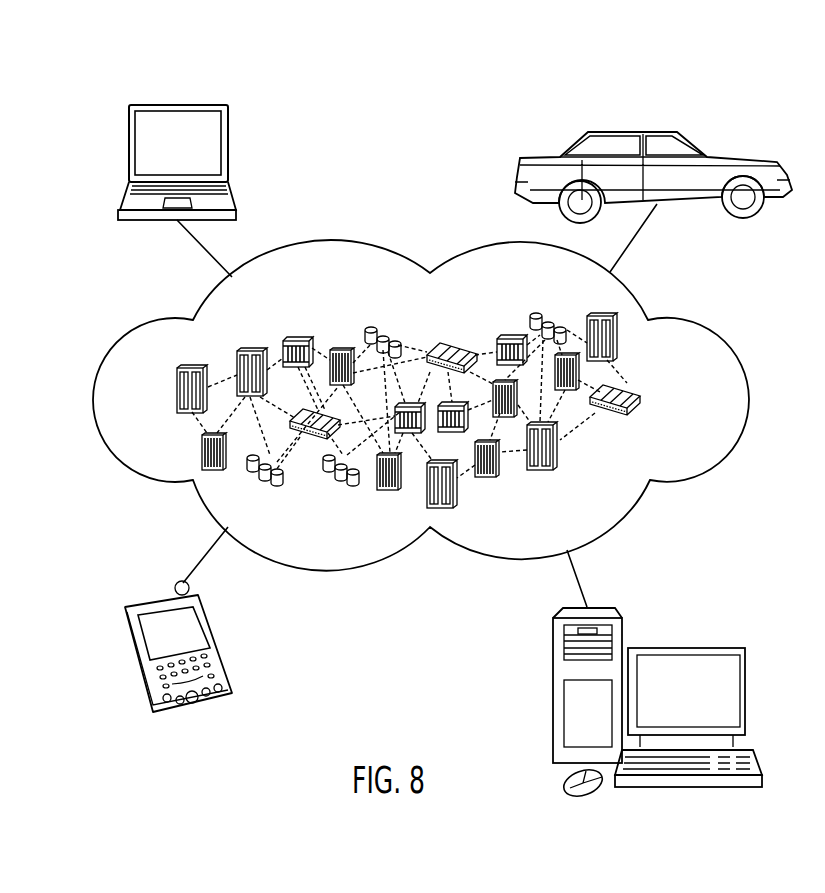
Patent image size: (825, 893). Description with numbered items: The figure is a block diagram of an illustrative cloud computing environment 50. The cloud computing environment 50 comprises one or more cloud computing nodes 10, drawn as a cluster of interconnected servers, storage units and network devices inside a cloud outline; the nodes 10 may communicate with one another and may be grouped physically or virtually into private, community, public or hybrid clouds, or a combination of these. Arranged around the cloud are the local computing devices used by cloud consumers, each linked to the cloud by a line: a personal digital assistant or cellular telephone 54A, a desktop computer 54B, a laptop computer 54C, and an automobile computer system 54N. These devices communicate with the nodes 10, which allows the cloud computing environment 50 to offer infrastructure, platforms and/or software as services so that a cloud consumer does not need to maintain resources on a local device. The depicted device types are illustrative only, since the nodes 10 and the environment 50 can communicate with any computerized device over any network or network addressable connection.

The cloud computing node 10 is at (647, 400).
The cloud computing environment 50 is at (697, 322).
The personal digital assistant or cellular telephone 54A is at (162, 592).
The desktop computer 54B is at (688, 645).
The laptop computer 54C is at (178, 103).
The automobile computer system 54N is at (636, 128).